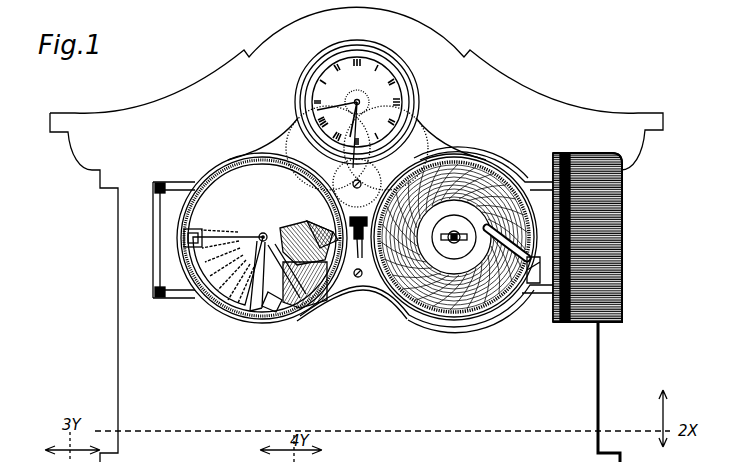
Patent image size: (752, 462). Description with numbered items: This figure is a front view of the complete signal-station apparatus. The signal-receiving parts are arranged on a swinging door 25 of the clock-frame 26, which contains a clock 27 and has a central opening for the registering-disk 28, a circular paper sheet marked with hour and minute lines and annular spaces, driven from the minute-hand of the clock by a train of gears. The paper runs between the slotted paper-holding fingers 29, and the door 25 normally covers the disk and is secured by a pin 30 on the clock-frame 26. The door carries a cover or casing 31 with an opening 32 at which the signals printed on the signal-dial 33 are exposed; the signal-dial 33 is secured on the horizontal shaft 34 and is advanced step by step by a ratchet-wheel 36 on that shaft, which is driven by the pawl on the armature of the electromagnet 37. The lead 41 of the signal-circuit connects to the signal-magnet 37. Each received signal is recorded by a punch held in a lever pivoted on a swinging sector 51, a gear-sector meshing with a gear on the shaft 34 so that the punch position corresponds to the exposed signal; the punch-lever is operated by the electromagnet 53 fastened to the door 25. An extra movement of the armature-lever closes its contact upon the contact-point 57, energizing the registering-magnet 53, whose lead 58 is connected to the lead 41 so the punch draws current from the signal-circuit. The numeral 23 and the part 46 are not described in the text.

The mainspring drum 23 is at (467, 173).
The swinging door 25 is at (554, 156).
The clock-frame 26 is at (440, 170).
The clock 27 is at (383, 93).
The registering-disk 28 is at (453, 243).
The slotted paper-holding fingers 29 is at (514, 273).
The pin 30 is at (359, 260).
The cover or casing 31 is at (262, 238).
The opening 32 is at (184, 238).
The signal-dial 33 is at (212, 235).
The horizontal shaft 34 is at (610, 156).
The ratchet-wheel 36 is at (258, 231).
The electromagnet 37 is at (308, 228).
The lead of the signal-circuit 41 is at (313, 290).
The stop 46 is at (538, 270).
The swinging sector 51 is at (250, 317).
The electromagnet 53 is at (281, 322).
The contact-point 57 is at (279, 228).
The lead 58 is at (297, 307).